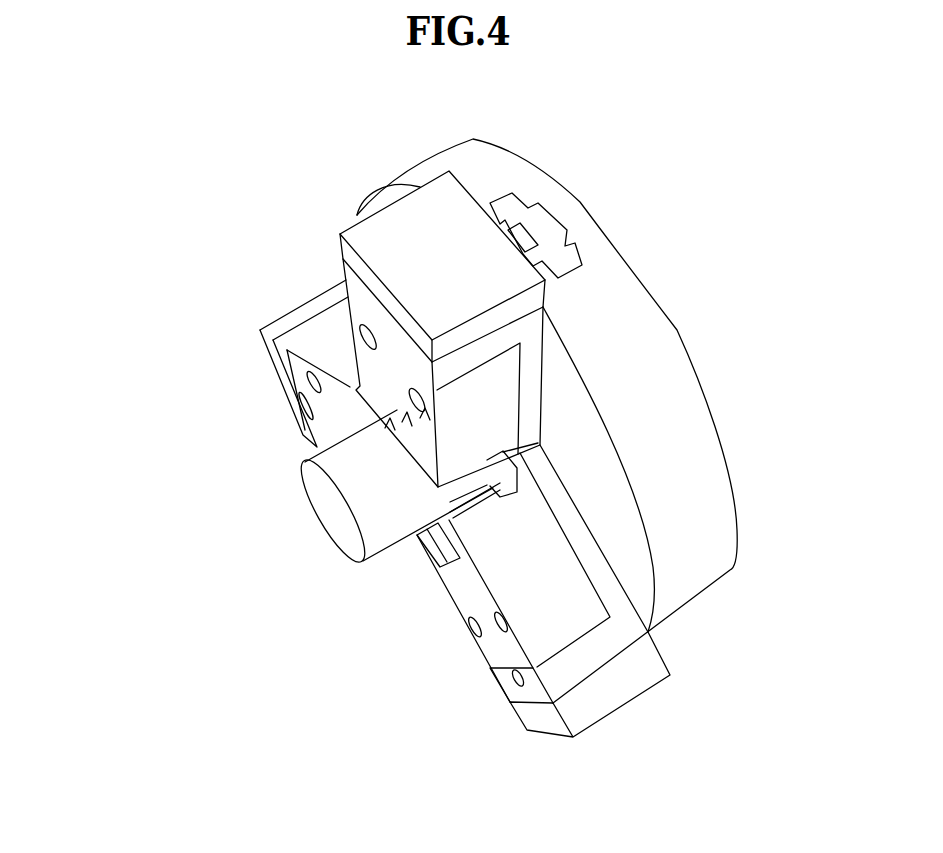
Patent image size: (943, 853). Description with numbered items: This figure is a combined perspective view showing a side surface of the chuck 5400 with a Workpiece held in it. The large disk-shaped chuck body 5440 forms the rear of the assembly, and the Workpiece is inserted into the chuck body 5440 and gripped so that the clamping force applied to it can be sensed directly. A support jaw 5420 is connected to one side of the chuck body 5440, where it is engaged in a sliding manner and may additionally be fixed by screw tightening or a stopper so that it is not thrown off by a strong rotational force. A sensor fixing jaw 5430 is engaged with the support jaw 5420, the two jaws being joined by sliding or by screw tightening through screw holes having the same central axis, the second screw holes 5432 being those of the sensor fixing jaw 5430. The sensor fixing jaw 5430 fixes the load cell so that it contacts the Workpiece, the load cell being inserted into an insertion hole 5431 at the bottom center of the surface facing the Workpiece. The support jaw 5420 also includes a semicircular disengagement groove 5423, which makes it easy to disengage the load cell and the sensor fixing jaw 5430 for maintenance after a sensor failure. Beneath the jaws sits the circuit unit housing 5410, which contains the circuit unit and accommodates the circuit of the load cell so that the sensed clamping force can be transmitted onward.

The chuck 5400 is at (147, 217).
The circuit unit housing 5410 is at (520, 722).
The support jaw 5420 is at (503, 684).
The disengagement groove 5423 is at (535, 669).
The sensor fixing jaw 5430 is at (452, 594).
The insertion hole 5431 is at (428, 538).
The second screw holes 5432 is at (513, 628).
The chuck body 5440 is at (678, 330).
The workpiece Workpiece is at (313, 507).